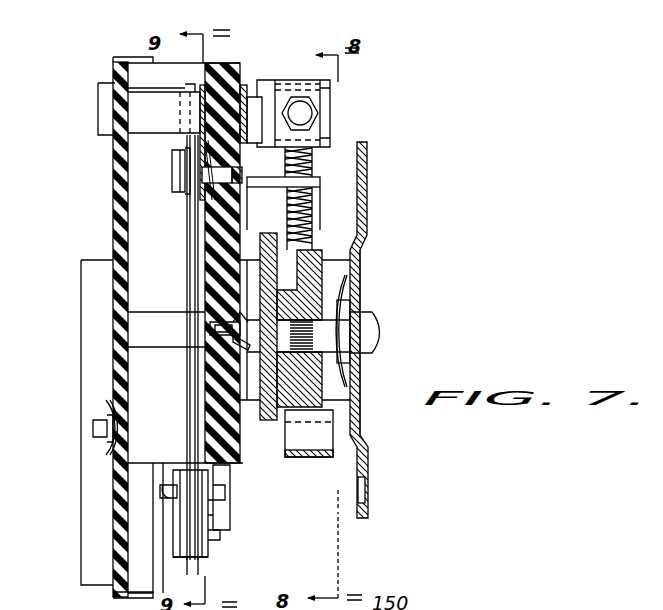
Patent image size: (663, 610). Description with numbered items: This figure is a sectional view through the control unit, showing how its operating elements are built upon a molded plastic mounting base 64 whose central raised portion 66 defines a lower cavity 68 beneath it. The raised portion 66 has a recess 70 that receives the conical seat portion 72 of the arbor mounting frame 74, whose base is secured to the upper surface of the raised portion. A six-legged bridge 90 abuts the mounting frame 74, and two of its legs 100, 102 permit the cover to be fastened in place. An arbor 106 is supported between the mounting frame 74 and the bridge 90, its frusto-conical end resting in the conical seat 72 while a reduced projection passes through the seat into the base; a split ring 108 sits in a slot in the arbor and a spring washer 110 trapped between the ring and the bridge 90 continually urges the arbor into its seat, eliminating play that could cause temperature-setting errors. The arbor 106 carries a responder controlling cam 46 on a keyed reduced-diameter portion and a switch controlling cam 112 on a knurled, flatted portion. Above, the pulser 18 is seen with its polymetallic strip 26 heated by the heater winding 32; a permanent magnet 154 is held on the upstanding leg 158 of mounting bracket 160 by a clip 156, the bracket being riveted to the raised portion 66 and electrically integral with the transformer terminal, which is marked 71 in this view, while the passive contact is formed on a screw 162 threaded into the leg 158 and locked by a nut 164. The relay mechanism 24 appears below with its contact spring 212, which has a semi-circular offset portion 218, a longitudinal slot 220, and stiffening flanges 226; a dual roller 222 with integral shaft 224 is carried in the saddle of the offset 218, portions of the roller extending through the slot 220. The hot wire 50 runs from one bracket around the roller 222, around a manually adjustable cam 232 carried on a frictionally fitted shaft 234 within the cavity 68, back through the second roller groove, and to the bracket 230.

The pulser 18 is at (322, 163).
The relay mechanism 24 is at (217, 546).
The polymetallic strip 26 is at (305, 205).
The heater winding 32 is at (310, 232).
The responder controlling cam 46 is at (266, 236).
The hot wire 50 is at (128, 410).
The mounting base 64 is at (115, 158).
The central raised portion 66 is at (222, 70).
The lower cavity 68 is at (215, 249).
The recess 70 is at (213, 318).
The bracket portion 71 is at (273, 92).
The conical seat portion 72 is at (213, 350).
The arbor mounting frame 74 is at (283, 427).
The bridge 90 is at (358, 373).
The bridge leg 100 is at (368, 196).
The bridge leg 102 is at (368, 507).
The arbor 106 is at (360, 328).
The split ring 108 is at (347, 300).
The spring washer 110 is at (353, 290).
The switch controlling cam 112 is at (320, 263).
The permanent magnet 154 is at (325, 122).
The clip 156 is at (317, 92).
The upstanding leg 158 is at (262, 80).
The mounting bracket 160 is at (250, 100).
The screw 162 is at (300, 130).
The nut 164 is at (307, 115).
The contact spring 212 is at (222, 478).
The offset portion 218 is at (220, 511).
The longitudinal slot 220 is at (160, 485).
The dual pulley or roller 222 is at (213, 548).
The shaft 224 is at (217, 538).
The stiffening flanges 226 is at (220, 490).
The bracket 230 is at (185, 86).
The manually adjustable cam 232 is at (178, 170).
The shaft 234 is at (198, 192).